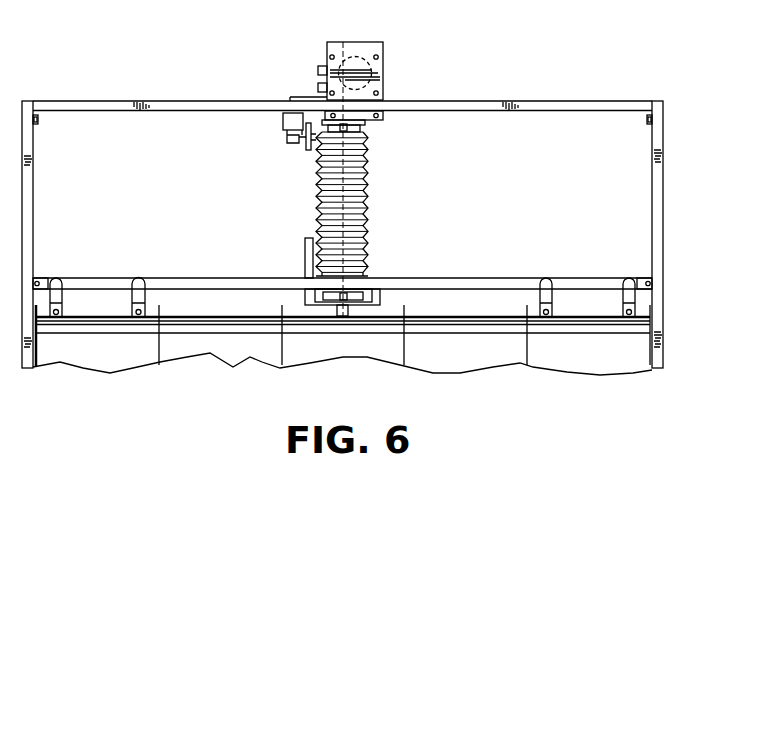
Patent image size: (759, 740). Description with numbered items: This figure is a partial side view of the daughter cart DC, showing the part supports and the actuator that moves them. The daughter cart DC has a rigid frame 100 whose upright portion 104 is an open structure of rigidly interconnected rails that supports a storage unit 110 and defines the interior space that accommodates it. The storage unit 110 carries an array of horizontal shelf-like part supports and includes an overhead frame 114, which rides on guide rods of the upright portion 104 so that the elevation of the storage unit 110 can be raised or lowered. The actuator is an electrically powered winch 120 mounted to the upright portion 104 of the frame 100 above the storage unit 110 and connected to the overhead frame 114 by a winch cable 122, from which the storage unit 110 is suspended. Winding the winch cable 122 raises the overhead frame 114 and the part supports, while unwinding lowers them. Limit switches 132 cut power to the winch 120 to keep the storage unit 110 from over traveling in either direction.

The daughter cart DC is at (79, 101).
The rigid frame 100 is at (378, 209).
The upright portion 104 is at (663, 183).
The storage unit 110 is at (652, 355).
The overhead frame 114 is at (594, 278).
The winch 120 is at (379, 73).
The winch cable 122 is at (340, 193).
The limit switches 132 is at (283, 120).